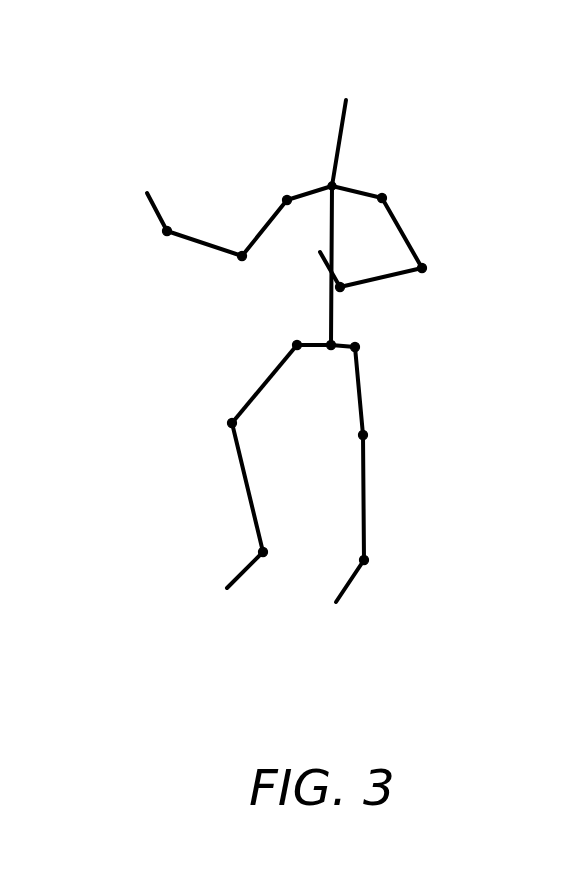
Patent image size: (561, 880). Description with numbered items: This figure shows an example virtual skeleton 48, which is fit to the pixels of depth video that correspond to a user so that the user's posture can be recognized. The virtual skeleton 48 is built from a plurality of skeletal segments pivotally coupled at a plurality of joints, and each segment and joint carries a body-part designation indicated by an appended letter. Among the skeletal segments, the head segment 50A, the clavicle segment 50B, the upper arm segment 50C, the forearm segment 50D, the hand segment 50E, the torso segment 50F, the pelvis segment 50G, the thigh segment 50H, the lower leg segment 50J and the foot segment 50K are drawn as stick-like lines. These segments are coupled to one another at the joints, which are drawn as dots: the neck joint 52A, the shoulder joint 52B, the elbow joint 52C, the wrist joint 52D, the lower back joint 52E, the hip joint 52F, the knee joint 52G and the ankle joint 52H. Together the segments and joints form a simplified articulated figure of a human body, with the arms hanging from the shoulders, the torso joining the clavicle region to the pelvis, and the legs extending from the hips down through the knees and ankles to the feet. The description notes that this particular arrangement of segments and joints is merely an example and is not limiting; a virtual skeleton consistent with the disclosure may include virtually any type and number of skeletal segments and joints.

The virtual skeleton 48 is at (520, 602).
The head skeletal segment 50A is at (345, 115).
The clavicle skeletal segment 50B is at (353, 192).
The upper arm skeletal segment 50C is at (270, 213).
The forearm skeletal segment 50D is at (388, 280).
The hand skeletal segment 50E is at (145, 203).
The torso skeletal segment 50F is at (328, 303).
The pelvis skeletal segment 50G is at (312, 348).
The thigh skeletal segment 50H is at (262, 381).
The lower leg skeletal segment 50J is at (366, 498).
The foot skeletal segment 50K is at (237, 575).
The neck joint 52A is at (327, 187).
The shoulder joint 52B is at (387, 197).
The elbow joint 52C is at (240, 258).
The wrist joint 52D is at (347, 280).
The lower back joint 52E is at (342, 338).
The hip joint 52F is at (357, 349).
The knee joint 52G is at (367, 435).
The ankle joint 52H is at (358, 560).